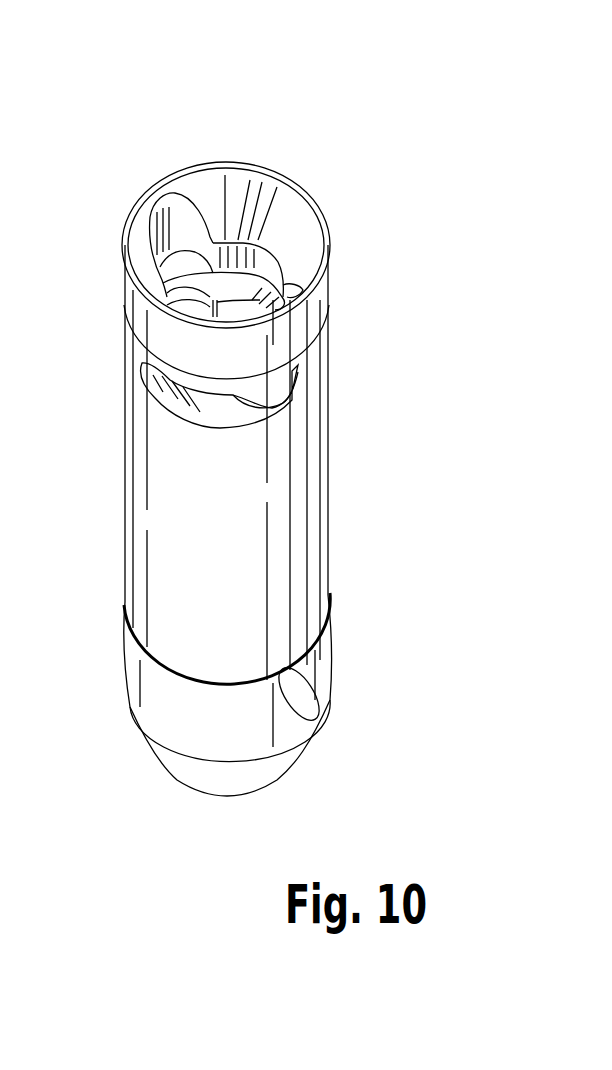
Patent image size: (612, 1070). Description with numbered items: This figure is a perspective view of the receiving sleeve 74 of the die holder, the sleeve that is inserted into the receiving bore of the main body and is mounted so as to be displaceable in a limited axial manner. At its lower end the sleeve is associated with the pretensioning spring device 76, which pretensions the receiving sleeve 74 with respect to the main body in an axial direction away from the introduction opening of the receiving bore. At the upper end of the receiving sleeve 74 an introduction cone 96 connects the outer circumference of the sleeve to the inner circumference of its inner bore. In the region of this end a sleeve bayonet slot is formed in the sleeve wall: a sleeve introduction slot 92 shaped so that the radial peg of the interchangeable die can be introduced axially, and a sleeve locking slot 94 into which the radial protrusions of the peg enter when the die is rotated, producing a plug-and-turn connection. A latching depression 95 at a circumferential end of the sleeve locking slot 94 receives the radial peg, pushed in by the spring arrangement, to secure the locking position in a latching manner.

The receiving sleeve 74 is at (276, 108).
The pretensioning spring device 76 is at (362, 610).
The sleeve introduction slot 92 is at (183, 220).
The sleeve locking slot 94 is at (203, 415).
The latching depression 95 is at (155, 394).
The introduction cone 96 is at (292, 222).